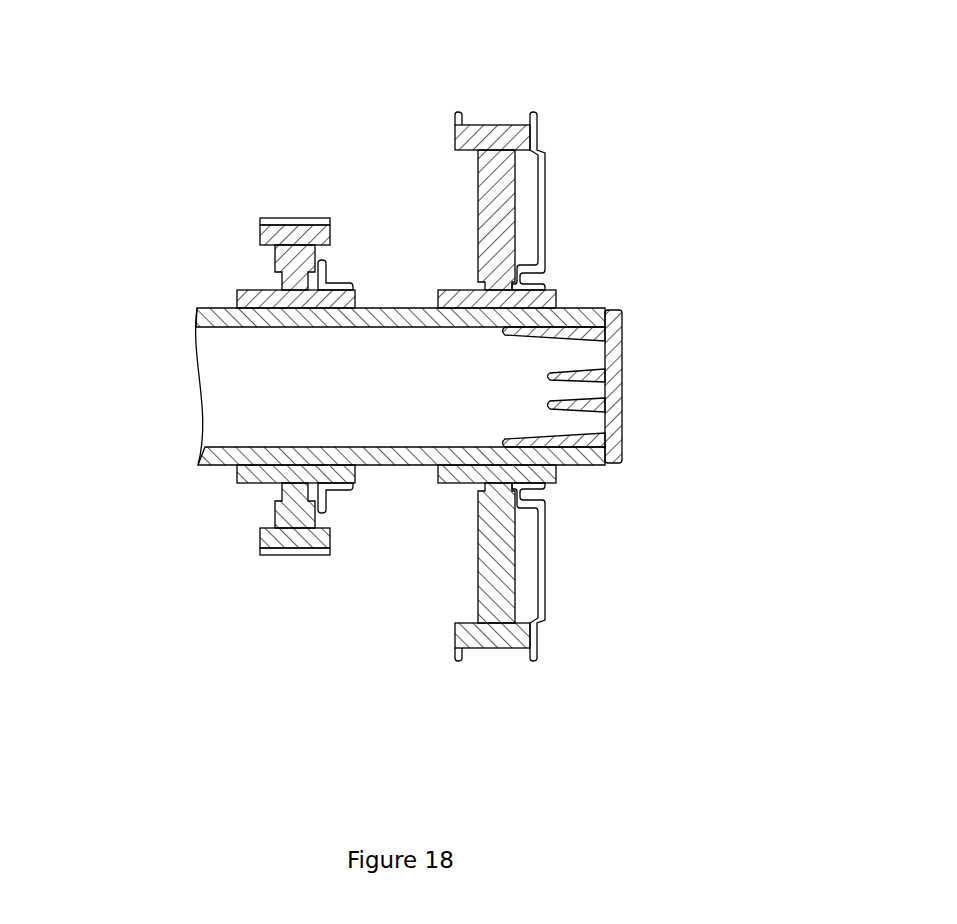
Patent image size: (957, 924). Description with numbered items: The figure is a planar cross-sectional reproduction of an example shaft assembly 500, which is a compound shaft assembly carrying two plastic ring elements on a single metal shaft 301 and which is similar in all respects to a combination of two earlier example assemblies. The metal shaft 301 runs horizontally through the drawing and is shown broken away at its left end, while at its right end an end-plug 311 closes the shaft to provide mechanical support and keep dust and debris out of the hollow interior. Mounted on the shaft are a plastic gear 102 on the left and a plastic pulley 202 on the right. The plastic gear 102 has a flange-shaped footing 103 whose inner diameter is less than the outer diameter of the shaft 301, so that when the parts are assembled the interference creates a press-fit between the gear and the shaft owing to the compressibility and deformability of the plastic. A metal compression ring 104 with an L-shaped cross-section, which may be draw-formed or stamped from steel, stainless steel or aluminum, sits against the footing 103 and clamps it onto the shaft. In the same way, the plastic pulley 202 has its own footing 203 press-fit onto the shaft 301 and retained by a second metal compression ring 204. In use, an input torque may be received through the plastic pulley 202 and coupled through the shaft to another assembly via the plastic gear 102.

The shaft assembly 500 is at (675, 77).
The solid metal shaft 301 is at (200, 455).
The end cap 311 is at (622, 382).
The plastic gear 102 is at (260, 232).
The footing 103 is at (235, 292).
The metal compression ring 104 is at (333, 283).
The plastic pulley 202 is at (457, 133).
The footing 203 is at (563, 292).
The metal compression ring 204 is at (545, 185).